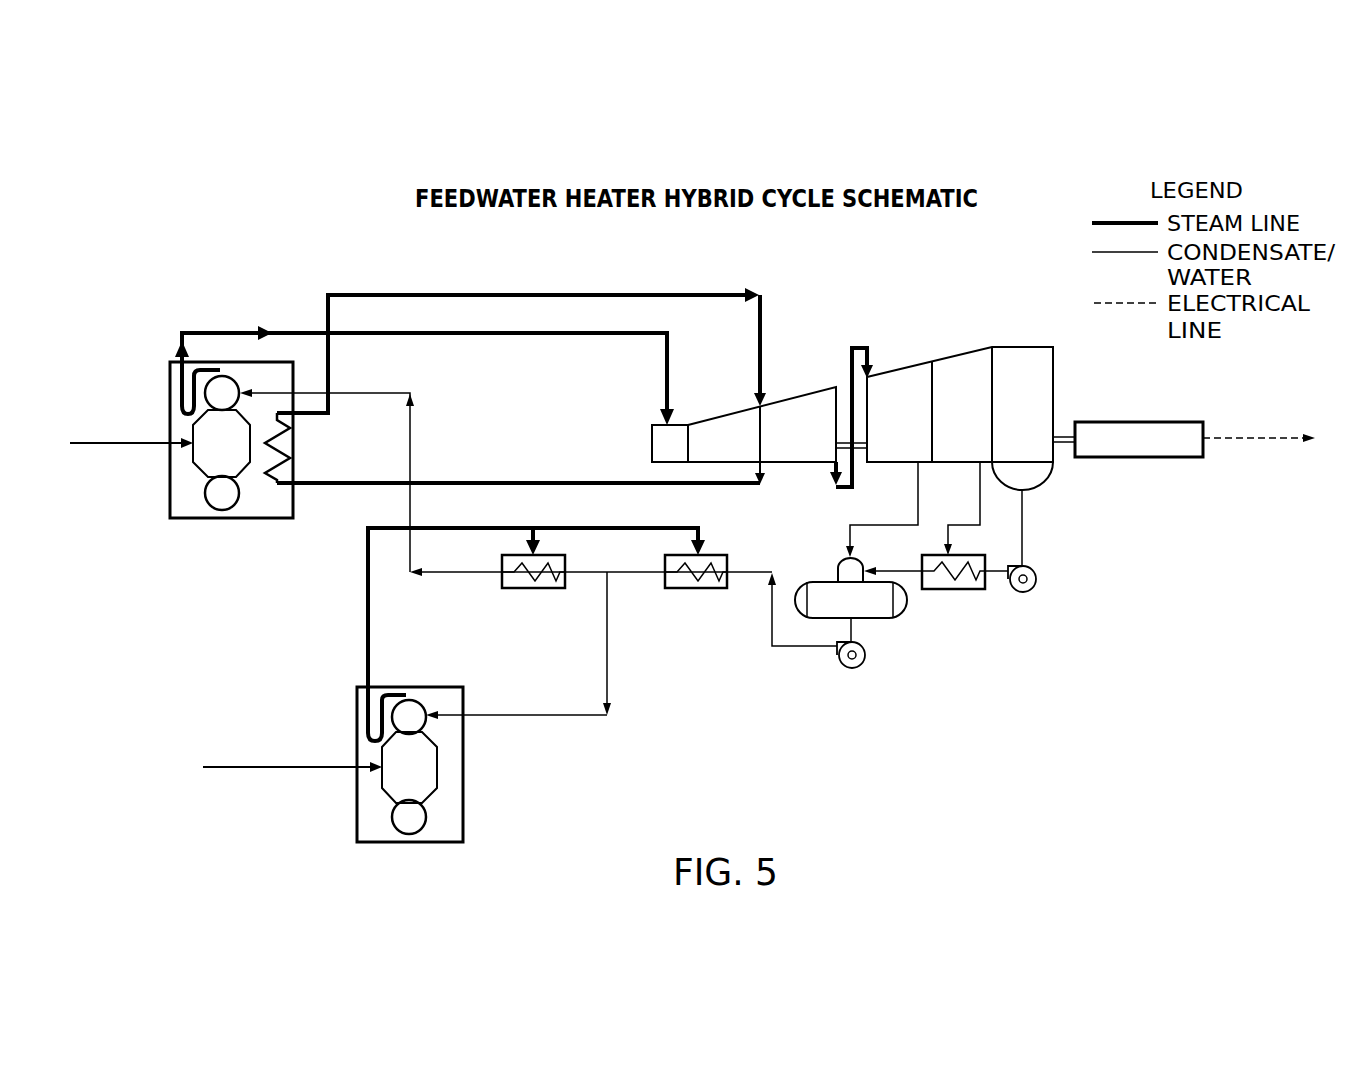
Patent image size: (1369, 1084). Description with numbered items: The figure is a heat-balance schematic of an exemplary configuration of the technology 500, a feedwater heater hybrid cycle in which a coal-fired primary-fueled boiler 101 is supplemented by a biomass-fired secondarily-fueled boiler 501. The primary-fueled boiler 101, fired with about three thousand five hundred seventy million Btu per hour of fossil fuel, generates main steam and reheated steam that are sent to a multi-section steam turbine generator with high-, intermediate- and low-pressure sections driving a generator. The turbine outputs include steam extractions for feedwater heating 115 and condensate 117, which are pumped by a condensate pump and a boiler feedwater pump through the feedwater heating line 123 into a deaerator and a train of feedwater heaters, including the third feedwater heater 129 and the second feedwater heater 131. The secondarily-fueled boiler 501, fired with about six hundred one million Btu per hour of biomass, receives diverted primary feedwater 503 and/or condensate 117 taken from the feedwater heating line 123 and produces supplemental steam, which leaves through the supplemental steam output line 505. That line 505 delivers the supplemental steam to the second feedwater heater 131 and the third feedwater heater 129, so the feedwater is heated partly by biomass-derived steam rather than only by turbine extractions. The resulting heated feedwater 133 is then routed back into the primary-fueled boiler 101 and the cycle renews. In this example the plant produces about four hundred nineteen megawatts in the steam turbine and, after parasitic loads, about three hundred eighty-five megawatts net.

The configuration of the technology 500 is at (130, 287).
The primary-fueled boiler 101 is at (222, 518).
The heated feedwater 133 is at (411, 436).
The second feedwater heater 131 is at (718, 556).
The third feedwater heater 129 is at (502, 588).
The feedwater heating line 123 is at (639, 574).
The steam extractions for feedwater heating 115 is at (980, 509).
The condensate 117 is at (1022, 525).
The supplemental steam output line 505 is at (368, 605).
The diverted primary feedwater 503 is at (545, 716).
The secondarily-fueled boiler 501 is at (409, 842).